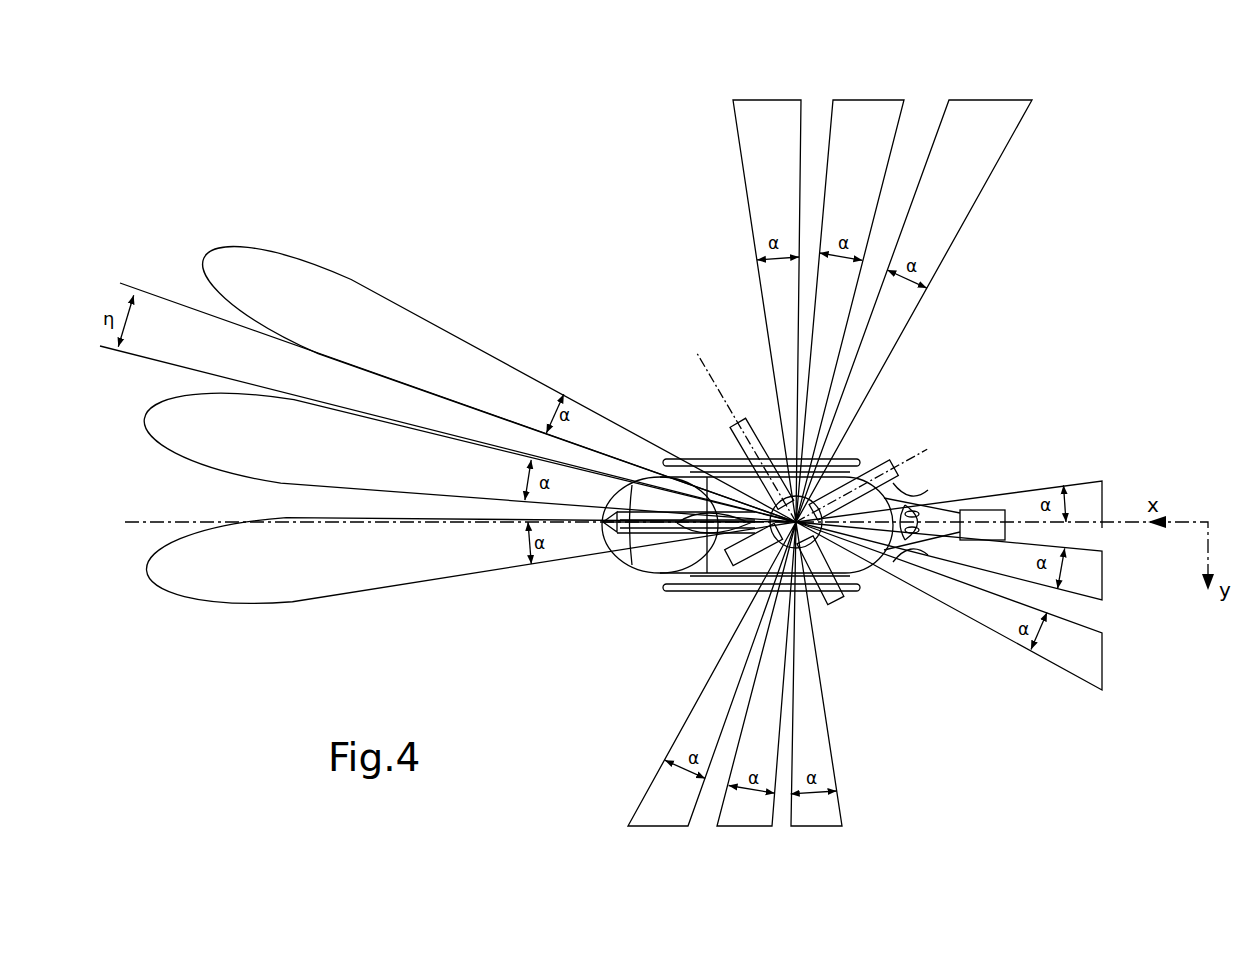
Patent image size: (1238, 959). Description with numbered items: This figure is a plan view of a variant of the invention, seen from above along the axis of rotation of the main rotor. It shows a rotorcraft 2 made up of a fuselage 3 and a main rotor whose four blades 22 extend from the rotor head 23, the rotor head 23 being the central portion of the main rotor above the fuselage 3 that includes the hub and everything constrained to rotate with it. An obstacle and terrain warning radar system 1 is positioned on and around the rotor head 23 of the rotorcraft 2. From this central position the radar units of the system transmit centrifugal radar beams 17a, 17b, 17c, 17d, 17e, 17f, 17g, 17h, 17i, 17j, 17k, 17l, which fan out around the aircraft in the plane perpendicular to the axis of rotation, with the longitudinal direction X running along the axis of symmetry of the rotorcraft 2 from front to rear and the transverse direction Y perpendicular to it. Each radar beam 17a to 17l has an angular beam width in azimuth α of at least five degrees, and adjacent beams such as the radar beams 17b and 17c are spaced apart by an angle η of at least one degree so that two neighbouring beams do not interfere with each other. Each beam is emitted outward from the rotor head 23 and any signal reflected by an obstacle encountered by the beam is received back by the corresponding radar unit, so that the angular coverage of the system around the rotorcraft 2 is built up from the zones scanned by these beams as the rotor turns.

The obstacle and terrain warning radar system 1 is at (717, 478).
The rotorcraft 2 is at (652, 633).
The fuselage 3 is at (612, 563).
The blades 22 is at (870, 578).
The rotor head 23 is at (866, 483).
The radar beam 17a is at (152, 582).
The radar beam 17b is at (148, 437).
The radar beam 17c is at (288, 240).
The radar beam 17d is at (746, 183).
The radar beam 17e is at (866, 117).
The radar beam 17f is at (982, 195).
The radar beam 17g is at (1086, 496).
The radar beam 17h is at (1090, 578).
The radar beam 17i is at (1093, 670).
The radar beam 17j is at (832, 812).
The radar beam 17k is at (748, 815).
The radar beam 17l is at (650, 792).